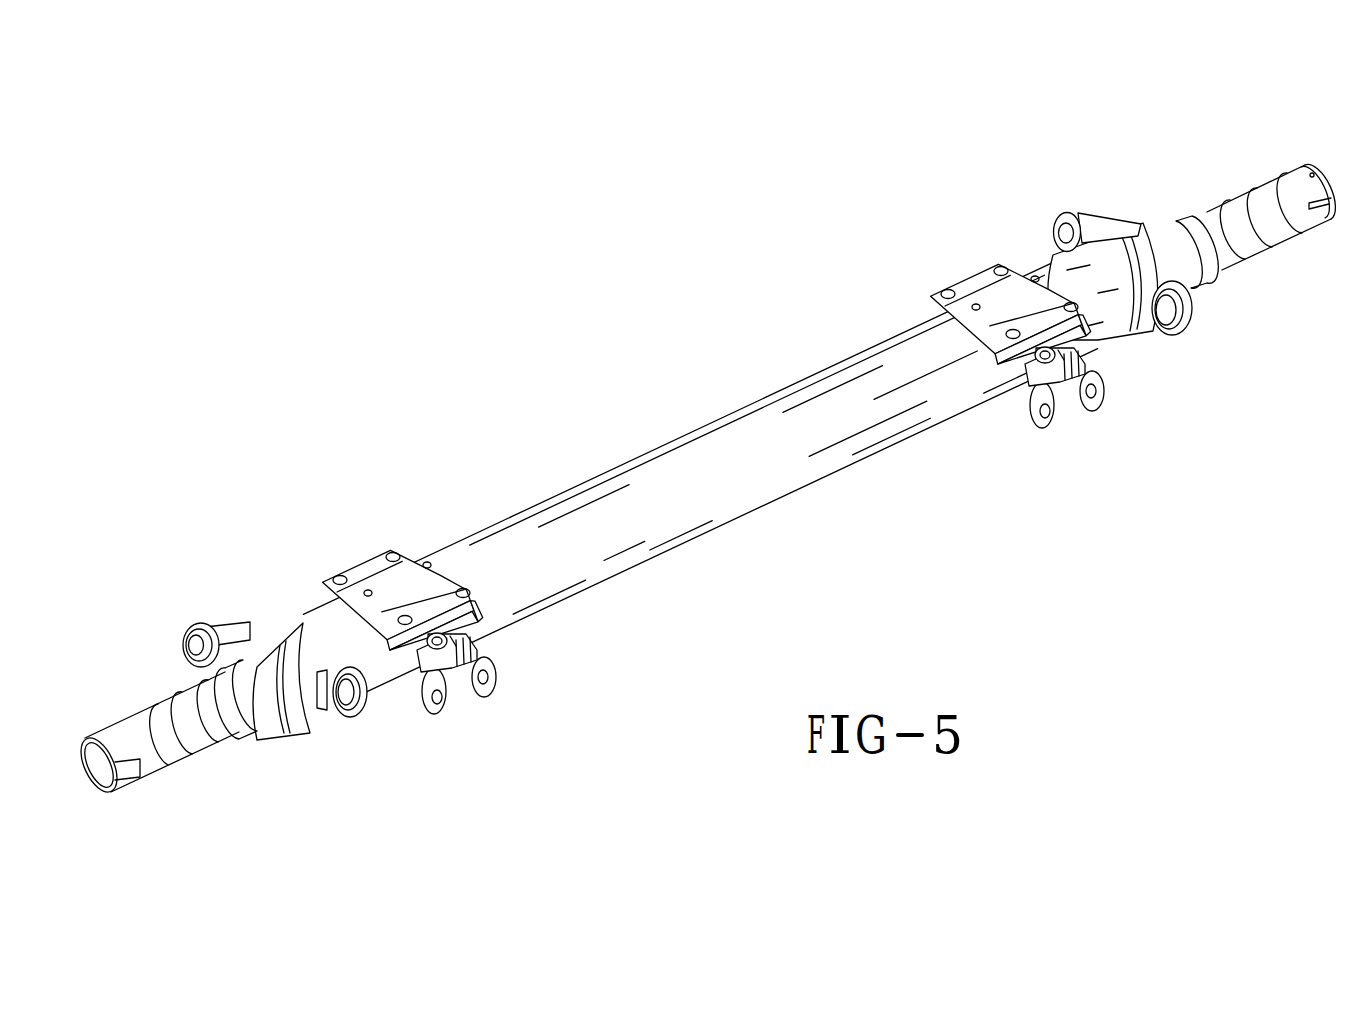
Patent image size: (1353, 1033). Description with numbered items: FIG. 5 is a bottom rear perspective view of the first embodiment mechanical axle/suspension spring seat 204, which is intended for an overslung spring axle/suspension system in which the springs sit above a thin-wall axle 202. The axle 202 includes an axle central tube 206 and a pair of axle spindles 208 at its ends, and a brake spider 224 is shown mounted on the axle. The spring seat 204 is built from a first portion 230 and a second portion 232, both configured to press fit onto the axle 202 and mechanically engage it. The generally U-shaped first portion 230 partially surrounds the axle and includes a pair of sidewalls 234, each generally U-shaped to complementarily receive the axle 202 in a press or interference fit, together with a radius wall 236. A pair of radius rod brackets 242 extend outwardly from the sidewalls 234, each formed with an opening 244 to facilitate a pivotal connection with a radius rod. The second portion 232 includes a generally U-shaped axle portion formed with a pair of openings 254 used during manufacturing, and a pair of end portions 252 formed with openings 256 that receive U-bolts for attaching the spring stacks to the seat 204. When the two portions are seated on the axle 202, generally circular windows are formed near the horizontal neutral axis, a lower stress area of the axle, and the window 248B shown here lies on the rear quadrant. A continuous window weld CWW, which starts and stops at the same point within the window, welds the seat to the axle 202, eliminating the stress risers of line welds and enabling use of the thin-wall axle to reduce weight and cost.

The thin-wall axle 202 is at (705, 474).
The first embodiment mechanical axle/suspension spring seat 204 is at (681, 378).
The axle central tube 206 is at (772, 505).
The axle spindles 208 is at (173, 760).
The brake spider 224 is at (228, 628).
The first portion 230 is at (798, 576).
The second portion 232 is at (358, 564).
The sidewalls 234 is at (412, 692).
The radius wall 236 is at (447, 663).
The radius rod brackets 242 is at (487, 690).
The opening 244 is at (478, 692).
The window 248B is at (450, 637).
The end portions 252 is at (472, 600).
The openings 254 is at (425, 563).
The openings 256 is at (345, 578).
The continuous window weld CWW is at (458, 638).